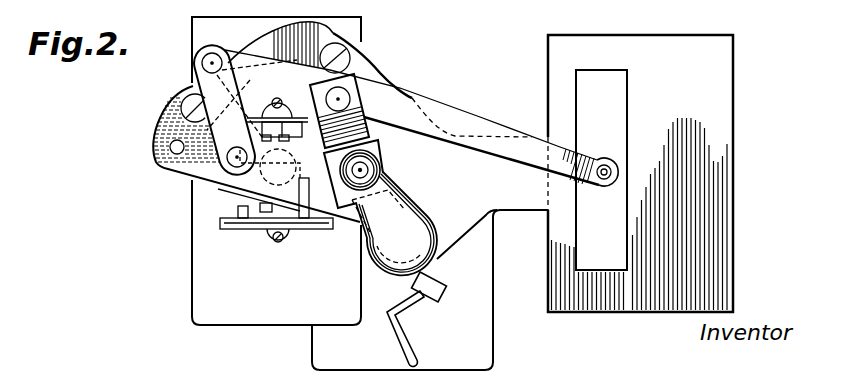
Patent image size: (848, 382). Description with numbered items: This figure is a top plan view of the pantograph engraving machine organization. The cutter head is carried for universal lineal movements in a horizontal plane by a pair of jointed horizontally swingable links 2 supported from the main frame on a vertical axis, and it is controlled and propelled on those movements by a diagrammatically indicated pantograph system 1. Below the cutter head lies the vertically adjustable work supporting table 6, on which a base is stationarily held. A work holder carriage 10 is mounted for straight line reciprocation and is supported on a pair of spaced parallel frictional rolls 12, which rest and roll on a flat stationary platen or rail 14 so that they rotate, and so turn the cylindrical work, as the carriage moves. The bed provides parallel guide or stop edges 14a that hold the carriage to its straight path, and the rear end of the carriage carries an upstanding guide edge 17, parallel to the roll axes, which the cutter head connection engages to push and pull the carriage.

The pantograph system 1 is at (487, 130).
The jointed horizontally swingable links 2 is at (282, 43).
The work supporting table 6 is at (263, 307).
The work holder carriage 10 is at (293, 225).
The rolls 12 is at (258, 203).
The platen or rail 14 is at (230, 194).
The guide or stop edges 14a is at (240, 230).
The guide edge 17 is at (392, 88).